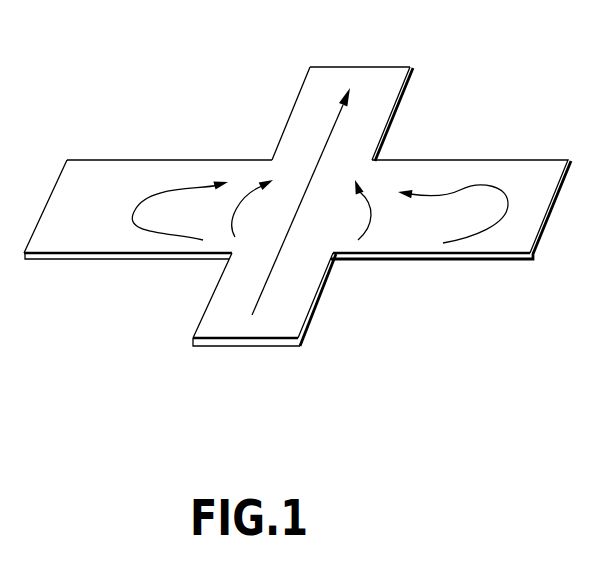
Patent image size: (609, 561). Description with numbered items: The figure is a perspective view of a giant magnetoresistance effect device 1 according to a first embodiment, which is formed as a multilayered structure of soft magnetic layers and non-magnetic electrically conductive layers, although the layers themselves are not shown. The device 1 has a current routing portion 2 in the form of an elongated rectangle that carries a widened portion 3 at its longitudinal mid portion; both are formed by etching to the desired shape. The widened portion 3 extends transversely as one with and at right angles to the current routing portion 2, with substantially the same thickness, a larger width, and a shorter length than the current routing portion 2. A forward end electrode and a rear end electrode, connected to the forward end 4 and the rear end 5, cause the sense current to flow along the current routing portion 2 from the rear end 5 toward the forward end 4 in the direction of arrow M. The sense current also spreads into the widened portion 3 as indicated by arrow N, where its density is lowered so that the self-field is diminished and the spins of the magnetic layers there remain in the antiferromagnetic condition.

The giant magnetoresistance effect device 1 is at (80, 145).
The current routing portion 2 is at (288, 102).
The widened portion 3 is at (107, 187).
The forward end 4 is at (385, 87).
The rear end 5 is at (283, 320).
The arrow M is at (272, 268).
The arrow N is at (143, 237).